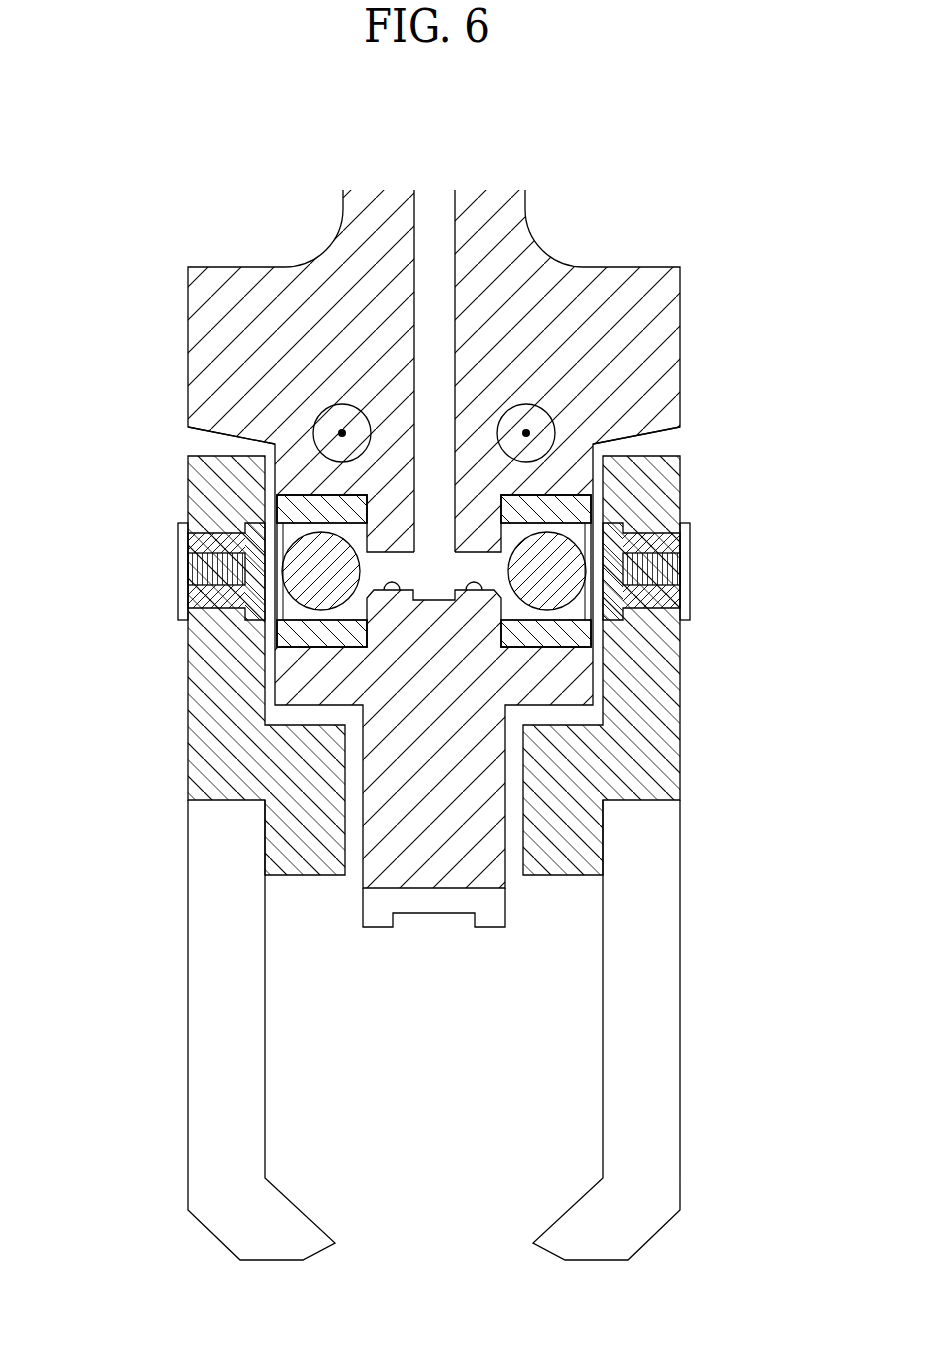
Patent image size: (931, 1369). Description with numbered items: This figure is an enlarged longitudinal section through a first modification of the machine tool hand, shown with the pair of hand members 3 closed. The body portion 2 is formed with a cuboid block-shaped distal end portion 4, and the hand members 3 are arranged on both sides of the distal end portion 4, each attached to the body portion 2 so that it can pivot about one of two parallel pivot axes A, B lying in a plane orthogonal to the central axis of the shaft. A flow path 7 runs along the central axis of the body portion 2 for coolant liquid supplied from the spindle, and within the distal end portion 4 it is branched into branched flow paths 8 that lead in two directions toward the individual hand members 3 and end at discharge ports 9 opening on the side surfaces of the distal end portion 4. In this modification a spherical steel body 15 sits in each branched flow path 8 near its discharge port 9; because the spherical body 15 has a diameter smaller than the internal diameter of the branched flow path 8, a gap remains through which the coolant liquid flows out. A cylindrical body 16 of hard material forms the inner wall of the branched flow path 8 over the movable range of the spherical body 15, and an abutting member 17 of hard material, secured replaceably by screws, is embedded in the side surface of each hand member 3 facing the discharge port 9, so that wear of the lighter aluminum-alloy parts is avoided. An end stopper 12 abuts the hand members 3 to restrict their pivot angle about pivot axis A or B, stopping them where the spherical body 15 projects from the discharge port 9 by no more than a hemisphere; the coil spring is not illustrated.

The body portion 2 is at (176, 289).
The hand members 3 is at (188, 1066).
The distal end portion 4 is at (593, 685).
The flow path 7 is at (457, 212).
The branched flow paths 8 is at (400, 590).
The discharge ports 9 is at (190, 600).
The end stopper 12 is at (207, 433).
The spherical body 15 is at (298, 542).
The cylindrical body 16 is at (288, 637).
The abutting member 17 is at (178, 538).
The pivot axis A is at (342, 433).
The pivot axis B is at (526, 433).